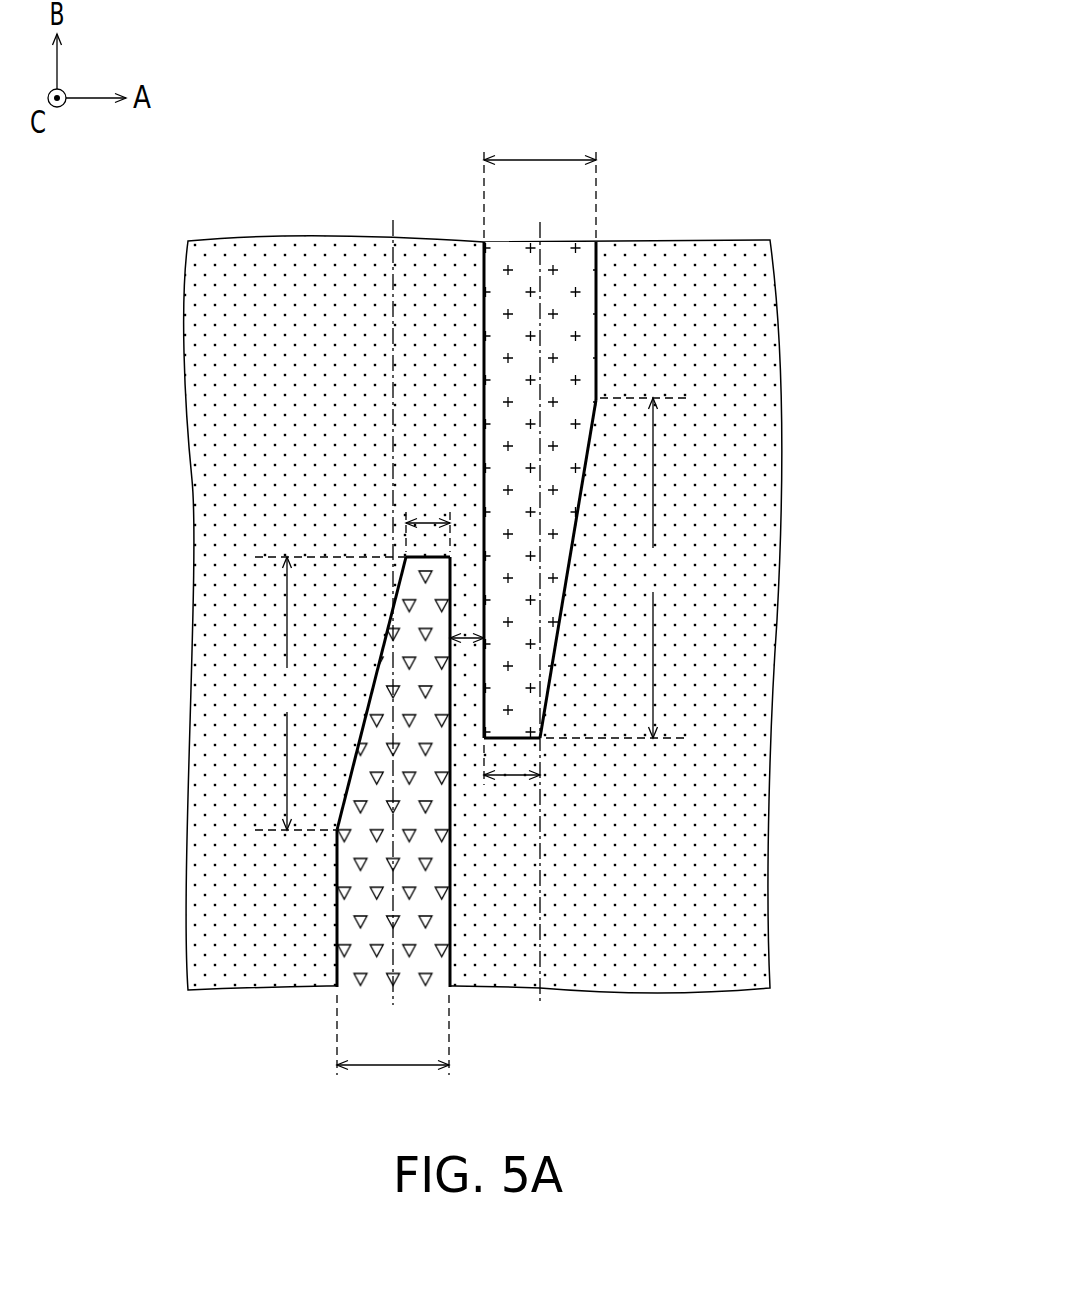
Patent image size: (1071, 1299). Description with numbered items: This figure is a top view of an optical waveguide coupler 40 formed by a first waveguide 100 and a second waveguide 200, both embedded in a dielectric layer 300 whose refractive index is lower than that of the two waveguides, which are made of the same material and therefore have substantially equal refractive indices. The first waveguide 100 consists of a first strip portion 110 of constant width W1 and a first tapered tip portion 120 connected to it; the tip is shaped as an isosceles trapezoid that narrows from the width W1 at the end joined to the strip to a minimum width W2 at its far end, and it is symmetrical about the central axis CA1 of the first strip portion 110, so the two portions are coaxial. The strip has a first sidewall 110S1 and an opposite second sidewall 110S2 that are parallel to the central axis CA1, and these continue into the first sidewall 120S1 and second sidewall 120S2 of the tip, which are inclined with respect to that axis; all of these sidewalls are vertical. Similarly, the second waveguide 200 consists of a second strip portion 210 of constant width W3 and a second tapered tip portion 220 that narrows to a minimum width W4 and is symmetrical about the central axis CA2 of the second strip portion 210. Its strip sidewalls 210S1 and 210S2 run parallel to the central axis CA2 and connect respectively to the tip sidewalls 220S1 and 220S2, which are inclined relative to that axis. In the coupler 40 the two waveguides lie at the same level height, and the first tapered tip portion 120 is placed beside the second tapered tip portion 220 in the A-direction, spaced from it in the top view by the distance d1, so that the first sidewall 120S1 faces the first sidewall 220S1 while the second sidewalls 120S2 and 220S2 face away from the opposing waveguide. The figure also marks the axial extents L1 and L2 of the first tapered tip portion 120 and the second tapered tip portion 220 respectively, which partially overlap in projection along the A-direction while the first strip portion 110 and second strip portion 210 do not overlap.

The optical waveguide coupler 40 is at (748, 223).
The first waveguide 100 is at (740, 12).
The first strip portion 110 is at (255, 987).
The first tapered tip portion 120 is at (255, 830).
The second waveguide 200 is at (895, 12).
The second strip portion 210 is at (688, 398).
The second tapered tip portion 220 is at (688, 738).
The dielectric layer 300 is at (757, 928).
The first sidewall of the first strip portion 110S1 is at (452, 950).
The second sidewall of the first strip portion 110S2 is at (335, 950).
The first sidewall of the first tapered tip portion 120S1 is at (454, 822).
The second sidewall of the first tapered tip portion 120S2 is at (380, 646).
The first sidewall of the second strip portion 210S1 is at (481, 278).
The second sidewall of the second strip portion 210S2 is at (599, 278).
The first sidewall of the second tapered tip portion 220S1 is at (481, 440).
The second sidewall of the second tapered tip portion 220S2 is at (585, 497).
The central axis of the first waveguide CA1 is at (393, 229).
The central axis of the second waveguide CA2 is at (562, 639).
The width of the first strip portion W1 is at (393, 1050).
The width of the second end of the first tapered tip portion W2 is at (428, 516).
The width of the second strip portion W3 is at (540, 179).
The width of the second end of the second tapered tip portion W4 is at (512, 780).
The length of upper fin portion L1 is at (330, 693).
The length of lower trench portion L2 is at (617, 568).
The distance d1 is at (467, 616).